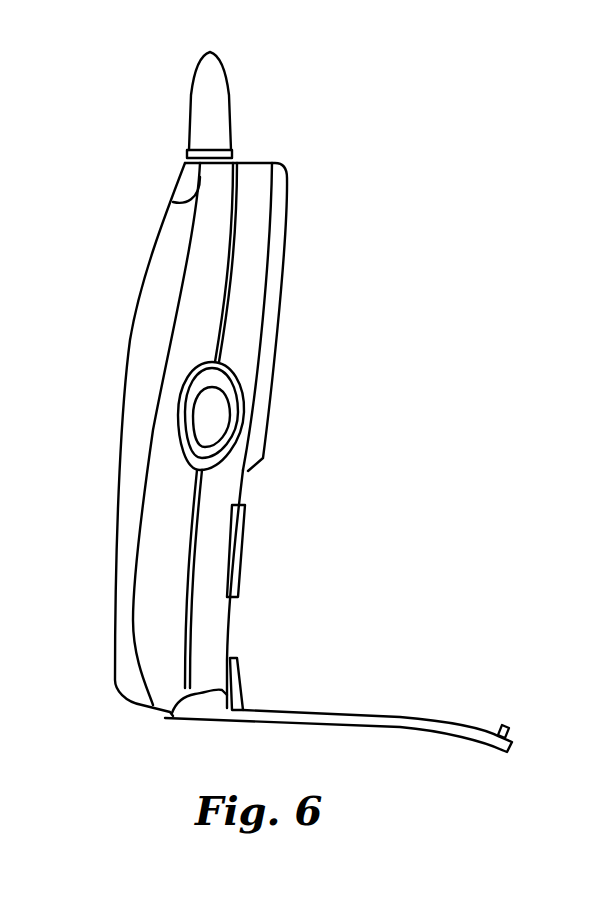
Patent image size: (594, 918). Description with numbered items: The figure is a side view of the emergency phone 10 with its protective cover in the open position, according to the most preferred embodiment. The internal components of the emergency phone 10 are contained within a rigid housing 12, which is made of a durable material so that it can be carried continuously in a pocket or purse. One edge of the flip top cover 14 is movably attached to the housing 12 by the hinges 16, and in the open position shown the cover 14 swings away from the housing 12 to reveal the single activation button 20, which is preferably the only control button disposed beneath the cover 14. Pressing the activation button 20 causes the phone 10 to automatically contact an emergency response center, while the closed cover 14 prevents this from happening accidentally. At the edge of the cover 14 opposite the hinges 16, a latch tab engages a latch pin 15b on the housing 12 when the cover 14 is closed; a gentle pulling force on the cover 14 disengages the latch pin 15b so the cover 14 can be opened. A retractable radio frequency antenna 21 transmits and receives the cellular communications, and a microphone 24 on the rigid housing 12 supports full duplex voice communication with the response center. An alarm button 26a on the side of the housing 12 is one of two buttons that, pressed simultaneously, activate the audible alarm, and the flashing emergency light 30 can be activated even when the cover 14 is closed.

The emergency communication apparatus 10 is at (350, 188).
The rigid housing 12 is at (133, 310).
The flip top cover 14 is at (395, 728).
The latch pin 15b is at (508, 730).
The hinges 16 is at (185, 698).
The single activation button 20 is at (240, 555).
The radio frequency antenna 21 is at (228, 102).
The microphone 24 is at (243, 680).
The alarm button 26a is at (190, 415).
The flashing emergency light 30 is at (175, 185).